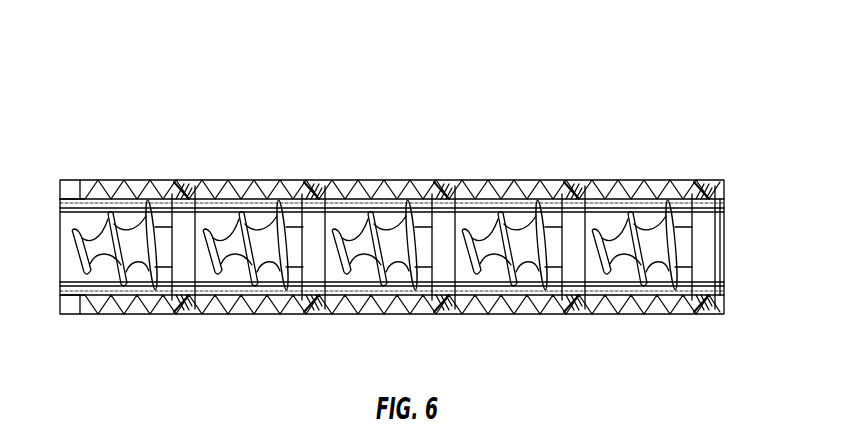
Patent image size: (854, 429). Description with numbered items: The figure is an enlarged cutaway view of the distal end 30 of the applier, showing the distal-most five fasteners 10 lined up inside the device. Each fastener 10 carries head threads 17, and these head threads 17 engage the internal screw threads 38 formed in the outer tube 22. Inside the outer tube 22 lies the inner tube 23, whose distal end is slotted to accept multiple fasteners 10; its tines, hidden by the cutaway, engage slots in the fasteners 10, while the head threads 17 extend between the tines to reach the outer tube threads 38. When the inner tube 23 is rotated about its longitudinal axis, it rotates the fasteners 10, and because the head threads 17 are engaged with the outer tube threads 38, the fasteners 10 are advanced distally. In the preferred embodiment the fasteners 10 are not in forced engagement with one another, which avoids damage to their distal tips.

The distal end 30 is at (405, 64).
The fastener 10 is at (647, 221).
The head threads 17 is at (704, 184).
The outer tube 22 is at (502, 188).
The inner tube 23 is at (343, 208).
The internal screw threads 38 is at (281, 314).